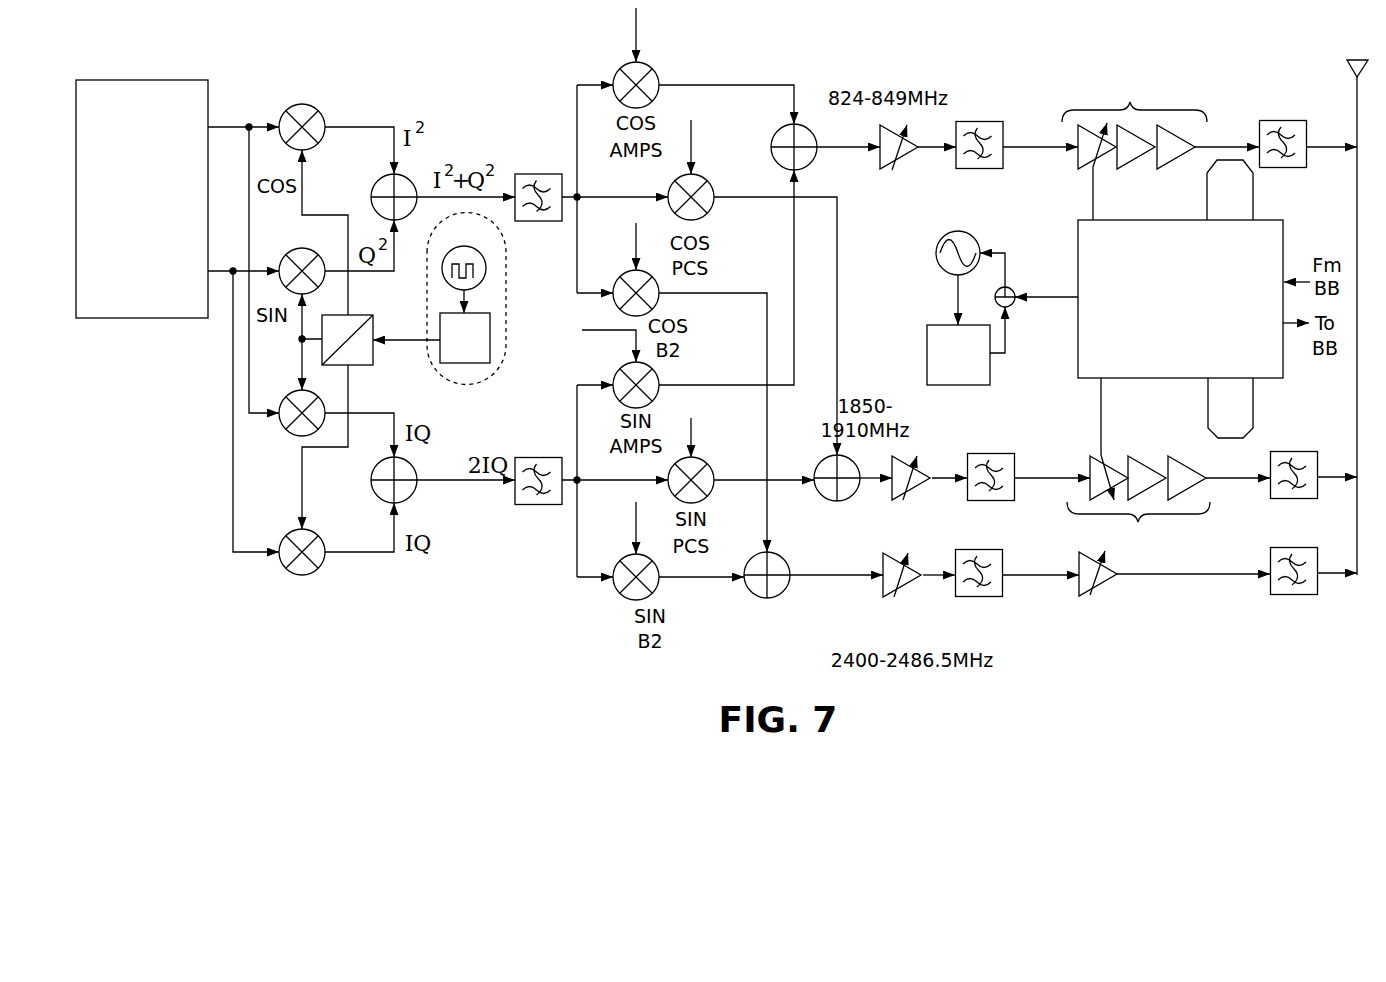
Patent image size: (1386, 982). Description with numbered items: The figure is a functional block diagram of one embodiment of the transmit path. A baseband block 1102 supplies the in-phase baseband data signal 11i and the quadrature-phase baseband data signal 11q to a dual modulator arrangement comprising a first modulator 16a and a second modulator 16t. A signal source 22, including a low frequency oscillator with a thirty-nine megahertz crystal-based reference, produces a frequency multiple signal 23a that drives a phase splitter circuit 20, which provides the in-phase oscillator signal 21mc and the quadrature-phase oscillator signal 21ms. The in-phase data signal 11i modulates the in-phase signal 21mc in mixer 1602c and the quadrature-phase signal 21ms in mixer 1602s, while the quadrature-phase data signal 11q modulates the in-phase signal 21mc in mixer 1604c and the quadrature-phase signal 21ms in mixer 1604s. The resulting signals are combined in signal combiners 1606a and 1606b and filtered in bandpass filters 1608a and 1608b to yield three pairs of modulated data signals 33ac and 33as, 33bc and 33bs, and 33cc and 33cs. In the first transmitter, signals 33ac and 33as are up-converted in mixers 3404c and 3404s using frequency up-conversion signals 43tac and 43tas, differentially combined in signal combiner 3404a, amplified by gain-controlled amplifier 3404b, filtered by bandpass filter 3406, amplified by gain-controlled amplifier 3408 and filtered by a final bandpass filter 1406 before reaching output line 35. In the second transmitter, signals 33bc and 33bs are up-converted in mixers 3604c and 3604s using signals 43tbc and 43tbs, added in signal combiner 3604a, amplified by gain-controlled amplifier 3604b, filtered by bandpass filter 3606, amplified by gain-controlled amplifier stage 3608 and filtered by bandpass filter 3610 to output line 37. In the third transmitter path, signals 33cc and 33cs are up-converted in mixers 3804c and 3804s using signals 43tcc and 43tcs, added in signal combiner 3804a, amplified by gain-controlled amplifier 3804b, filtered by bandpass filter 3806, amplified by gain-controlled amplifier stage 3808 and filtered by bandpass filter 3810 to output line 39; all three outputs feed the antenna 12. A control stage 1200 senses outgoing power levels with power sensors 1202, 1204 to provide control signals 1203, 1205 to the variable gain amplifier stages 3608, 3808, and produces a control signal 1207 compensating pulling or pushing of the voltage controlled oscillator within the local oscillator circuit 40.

The baseband processor 1102 is at (104, 319).
The in-phase baseband data signal 11i is at (227, 127).
The quadrature-phase baseband data signal 11q is at (222, 271).
The mixer 1602c is at (310, 105).
The mixer 1604s is at (285, 258).
The mixer 1602s is at (285, 430).
The mixer 1604c is at (310, 575).
The modulator 16a is at (309, 175).
The phase mixer block 16t is at (291, 375).
The in-phase oscillator signal 21mc is at (328, 215).
The quadrature-phase oscillator signal 21ms is at (300, 364).
The phase splitter circuit 20 is at (360, 315).
The frequency multiple signal 23a is at (402, 343).
The signal source 22 is at (472, 385).
The signal combiner 1606a is at (413, 182).
The signal combiner 1606b is at (412, 497).
The bandpass filter 1608a is at (532, 173).
The bandpass filter 1608b is at (533, 457).
The modulated data signal 33cc is at (577, 98).
The modulated data signal 33bc is at (595, 197).
The modulated data signal 33ac is at (577, 255).
The modulated data signal 33cs is at (580, 462).
The modulated data signal 33bs is at (590, 483).
The modulated data signal 33as is at (586, 582).
The frequency up-conversion signal 43tcc is at (636, 17).
The frequency up-conversion signal 43tbc is at (692, 142).
The frequency up-conversion signal 43tac is at (636, 247).
The frequency up-conversion signal 43tcs is at (587, 332).
The frequency up-conversion signal 43tbs is at (692, 430).
The frequency up-conversion signal 43tas is at (636, 527).
The mixer 3804c is at (657, 68).
The mixer 3604c is at (717, 208).
The mixer 3404c is at (612, 312).
The mixer 3804s is at (660, 382).
The mixer 3604s is at (713, 465).
The mixer 3404s is at (628, 605).
The signal combiner 3804a is at (803, 127).
The signal combiner 3604a is at (840, 501).
The signal combiner 3404a is at (772, 598).
The gain-controlled amplifier 3804b is at (902, 160).
The gain-controlled amplifier 3604b is at (915, 492).
The gain-controlled amplifier 3404b is at (892, 594).
The bandpass filter 3806 is at (973, 120).
The bandpass filter 3606 is at (985, 451).
The bandpass filter 3406 is at (974, 546).
The gain-controlled amplifier stage 3808 is at (1105, 123).
The gain-controlled amplifier stage 3608 is at (1112, 500).
The gain-controlled amplifier 3408 is at (1089, 596).
The bandpass filter 3810 is at (1275, 118).
The bandpass filter 3610 is at (1289, 450).
The B2 output filter 1406 is at (1289, 545).
The AMPS output line 39 is at (1316, 148).
The PCS output line 37 is at (1330, 480).
The B2 output line 35 is at (1330, 576).
The antenna 12 is at (1357, 59).
The local oscillator circuit 40 is at (959, 308).
The control stage 1200 is at (1078, 230).
The control signal 1207 is at (1045, 297).
The control signal 1205 is at (1093, 197).
The power sensor 1204 is at (1228, 163).
The control signal 1203 is at (1101, 424).
The power sensor 1202 is at (1225, 434).